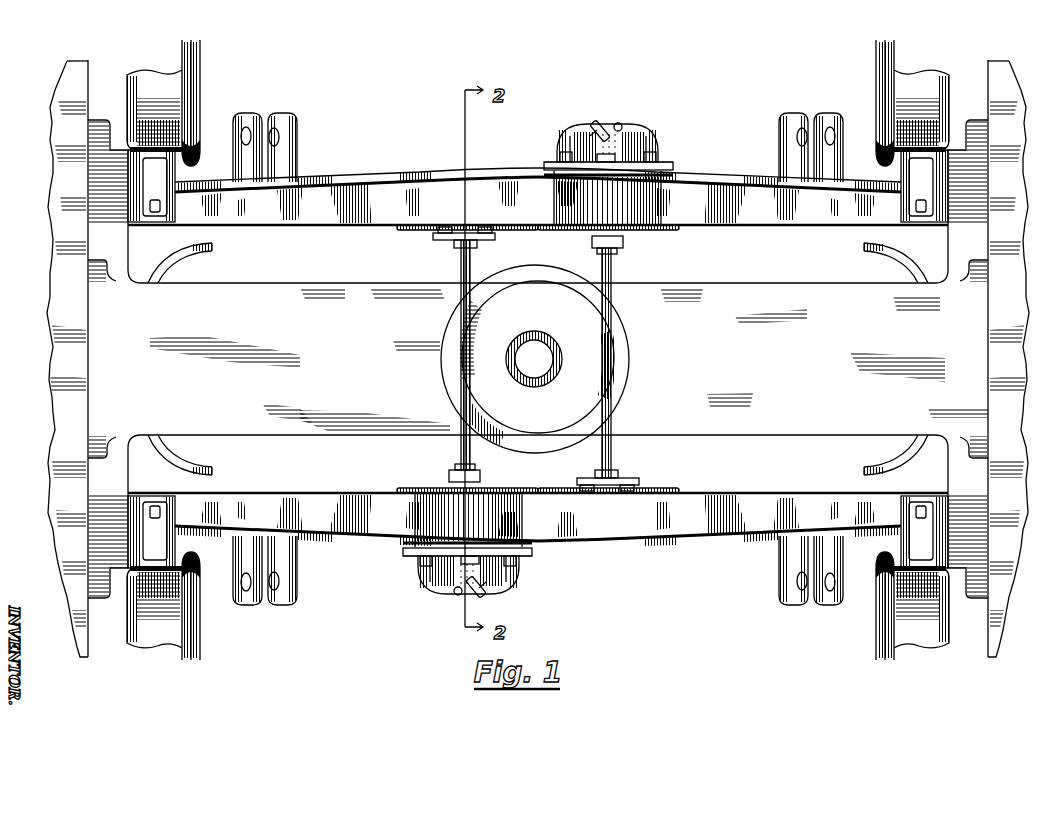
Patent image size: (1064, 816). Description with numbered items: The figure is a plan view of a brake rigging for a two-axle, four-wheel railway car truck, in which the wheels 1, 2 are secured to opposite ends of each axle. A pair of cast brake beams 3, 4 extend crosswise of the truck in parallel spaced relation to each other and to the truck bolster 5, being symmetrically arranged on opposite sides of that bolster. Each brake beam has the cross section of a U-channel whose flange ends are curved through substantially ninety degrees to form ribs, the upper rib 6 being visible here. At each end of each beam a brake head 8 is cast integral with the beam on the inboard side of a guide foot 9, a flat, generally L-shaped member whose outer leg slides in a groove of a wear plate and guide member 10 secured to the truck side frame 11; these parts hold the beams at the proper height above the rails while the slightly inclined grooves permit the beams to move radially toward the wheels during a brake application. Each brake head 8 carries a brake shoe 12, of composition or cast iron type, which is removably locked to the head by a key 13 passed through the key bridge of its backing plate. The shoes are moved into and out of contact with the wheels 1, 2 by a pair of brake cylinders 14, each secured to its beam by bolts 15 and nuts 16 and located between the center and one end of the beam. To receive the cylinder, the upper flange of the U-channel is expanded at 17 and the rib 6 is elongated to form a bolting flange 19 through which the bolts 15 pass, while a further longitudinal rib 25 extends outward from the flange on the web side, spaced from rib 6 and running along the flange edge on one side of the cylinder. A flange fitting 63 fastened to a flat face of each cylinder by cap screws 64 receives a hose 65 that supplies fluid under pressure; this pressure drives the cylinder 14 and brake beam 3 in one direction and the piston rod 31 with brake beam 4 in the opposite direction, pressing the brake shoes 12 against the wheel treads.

The wheel 1 is at (168, 112).
The wheel 2 is at (168, 608).
The brake beam 3 is at (706, 540).
The brake beam 4 is at (390, 178).
The truck bolster 5 is at (704, 292).
The upper rib 6 is at (424, 178).
The brake head 8 is at (160, 180).
The guide foot 9 is at (140, 222).
The wear plate and guide member 10 is at (100, 210).
The truck side frame 11 is at (60, 357).
The brake shoe 12 is at (165, 132).
The key 13 is at (184, 150).
The brake cylinder 14 is at (559, 140).
The bolt 15 is at (560, 160).
The nut 16 is at (632, 186).
The expanded upper flange 17 is at (660, 168).
The bolting flange 19 is at (543, 166).
The longitudinal rib 25 is at (410, 230).
The piston rod 31 is at (458, 460).
The flange fitting 63 is at (622, 126).
The cap screw 64 is at (602, 122).
The hose 65 is at (592, 134).